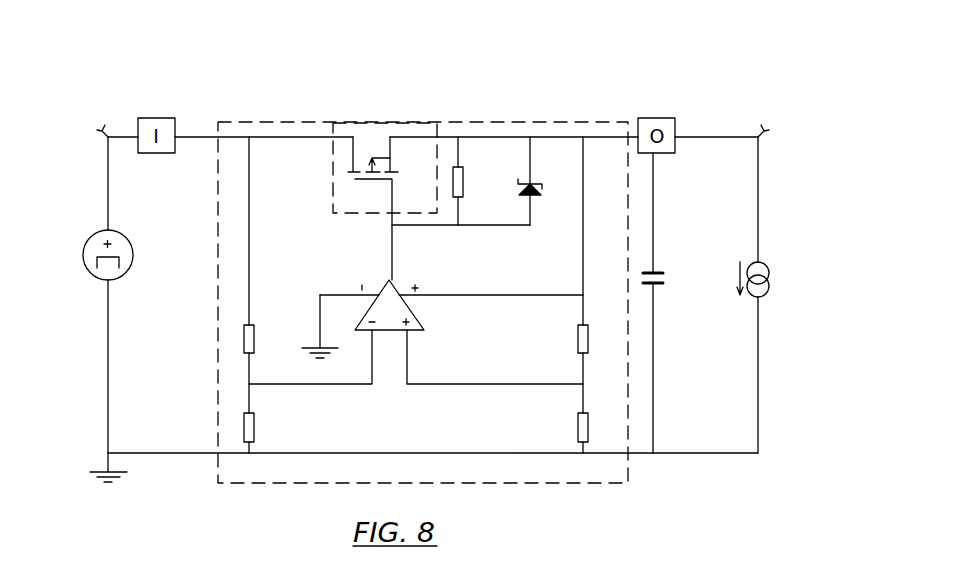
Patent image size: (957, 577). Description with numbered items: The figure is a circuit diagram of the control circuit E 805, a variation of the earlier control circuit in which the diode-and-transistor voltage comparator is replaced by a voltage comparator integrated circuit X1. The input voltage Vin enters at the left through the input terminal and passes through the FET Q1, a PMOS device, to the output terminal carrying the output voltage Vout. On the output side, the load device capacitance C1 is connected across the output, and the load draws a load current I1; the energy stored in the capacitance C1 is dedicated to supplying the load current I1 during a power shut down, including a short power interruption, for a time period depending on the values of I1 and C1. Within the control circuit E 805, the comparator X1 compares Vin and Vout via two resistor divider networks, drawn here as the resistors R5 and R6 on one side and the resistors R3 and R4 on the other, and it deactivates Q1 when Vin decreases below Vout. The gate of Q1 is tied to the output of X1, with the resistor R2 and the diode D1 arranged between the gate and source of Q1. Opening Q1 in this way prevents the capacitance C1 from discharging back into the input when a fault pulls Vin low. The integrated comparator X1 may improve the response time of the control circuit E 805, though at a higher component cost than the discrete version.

The control circuit E 805 is at (442, 442).
The FET Q1 is at (385, 174).
The resistor R2 is at (476, 181).
The zener diode D1 is at (542, 181).
The voltage comparator integrated circuit X1 is at (451, 302).
The resistor R3 is at (600, 335).
The resistor R4 is at (600, 424).
The resistor R5 is at (265, 335).
The resistor R6 is at (265, 424).
The load device capacitance C1 is at (670, 303).
The load current I1 is at (764, 295).
The input voltage Vin is at (79, 135).
The output voltage Vout is at (795, 136).